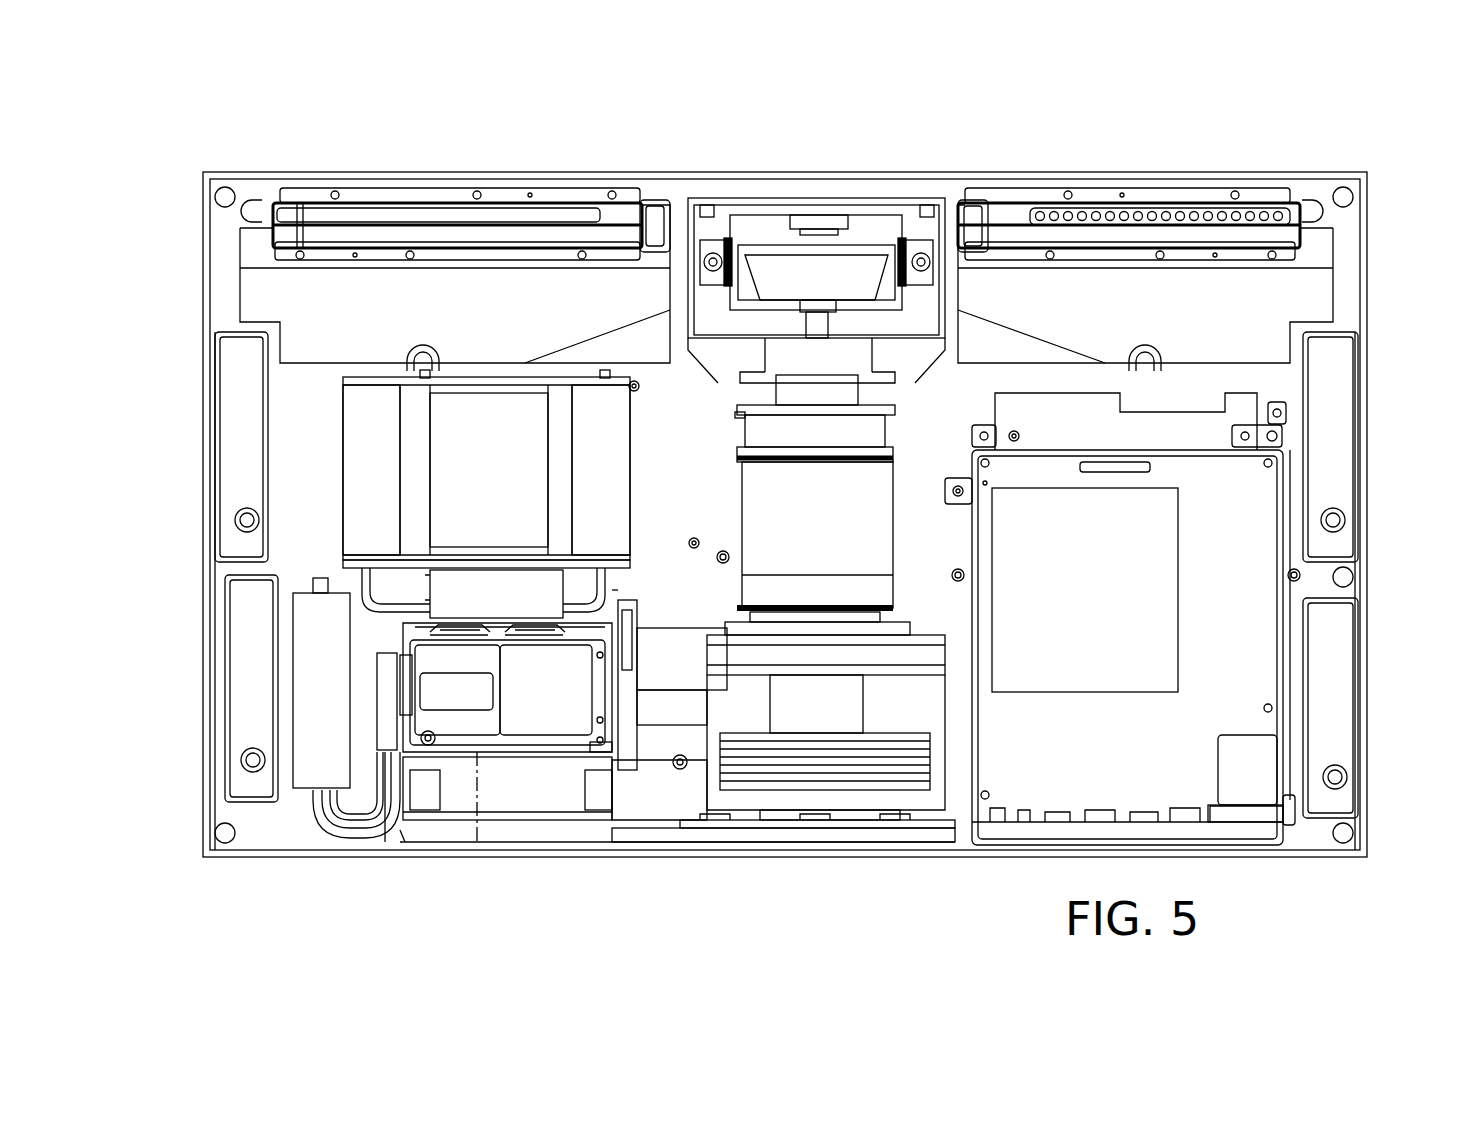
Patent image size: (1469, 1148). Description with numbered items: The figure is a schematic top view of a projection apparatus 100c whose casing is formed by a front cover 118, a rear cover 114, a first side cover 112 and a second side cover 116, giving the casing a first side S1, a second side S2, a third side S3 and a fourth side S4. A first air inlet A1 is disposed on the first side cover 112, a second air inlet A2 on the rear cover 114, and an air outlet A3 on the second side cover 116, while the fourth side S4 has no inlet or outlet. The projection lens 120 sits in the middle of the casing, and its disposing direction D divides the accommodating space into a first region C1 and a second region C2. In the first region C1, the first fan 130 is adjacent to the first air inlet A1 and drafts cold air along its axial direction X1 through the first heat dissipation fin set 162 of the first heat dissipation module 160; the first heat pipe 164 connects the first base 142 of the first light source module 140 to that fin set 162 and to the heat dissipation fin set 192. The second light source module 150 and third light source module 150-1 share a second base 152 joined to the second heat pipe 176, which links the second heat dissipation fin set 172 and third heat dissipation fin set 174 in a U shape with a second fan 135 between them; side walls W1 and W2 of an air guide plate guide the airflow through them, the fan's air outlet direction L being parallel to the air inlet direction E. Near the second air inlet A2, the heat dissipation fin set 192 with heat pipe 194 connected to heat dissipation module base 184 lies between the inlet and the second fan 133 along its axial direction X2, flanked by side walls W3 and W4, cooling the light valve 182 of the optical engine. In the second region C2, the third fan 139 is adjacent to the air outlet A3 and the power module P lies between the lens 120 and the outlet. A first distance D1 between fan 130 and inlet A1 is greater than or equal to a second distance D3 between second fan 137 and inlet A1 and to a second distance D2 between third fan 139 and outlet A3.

The projection apparatus 100c is at (1468, 936).
The first side cover 112 is at (205, 288).
The rear cover 114 is at (383, 858).
The second side cover 116 is at (1365, 288).
The front cover 118 is at (405, 172).
The projection lens 120 is at (851, 275).
The first fan 130 is at (242, 655).
The second fan 133 is at (605, 808).
The second fan 135 is at (510, 484).
The second fan 137 is at (243, 422).
The third fan 139 is at (1335, 450).
The first light source module 140 is at (506, 687).
The first base 142 is at (385, 678).
The second light source module 150 is at (450, 643).
The third light source module 150-1 is at (520, 643).
The second base 152 is at (488, 625).
The first heat dissipation module 160 is at (249, 783).
The first heat dissipation fin set 162 is at (315, 725).
The first heat pipe 164 is at (340, 825).
The second heat dissipation fin set 172 is at (370, 467).
The third heat dissipation fin set 174 is at (600, 482).
The second heat pipe 176 is at (598, 575).
The light valve 182 is at (880, 822).
The heat dissipation module base 184 is at (720, 830).
The heat dissipation fin set 192 is at (600, 838).
The heat pipe 194 is at (690, 832).
The first region C1 is at (815, 104).
The second region C2 is at (1367, 104).
The disposing direction D is at (817, 865).
The first side S1 is at (190, 226).
The second side S2 is at (327, 870).
The third side S3 is at (1380, 226).
The fourth side S4 is at (301, 160).
The air inlet direction E is at (180, 367).
The first air inlet A1 is at (158, 572).
The second air inlet A2 is at (513, 895).
The air outlet A3 is at (1414, 572).
The air outlet direction L is at (505, 481).
The side wall W1 is at (608, 383).
The side wall W2 is at (620, 565).
The side wall W3 is at (415, 835).
The side wall W4 is at (652, 828).
The first distance D1 is at (203, 857).
The second distance D2 is at (1356, 857).
The second distance D3 is at (235, 571).
The axial direction X1 is at (397, 693).
The axial direction X2 is at (507, 800).
The power module P is at (1160, 588).